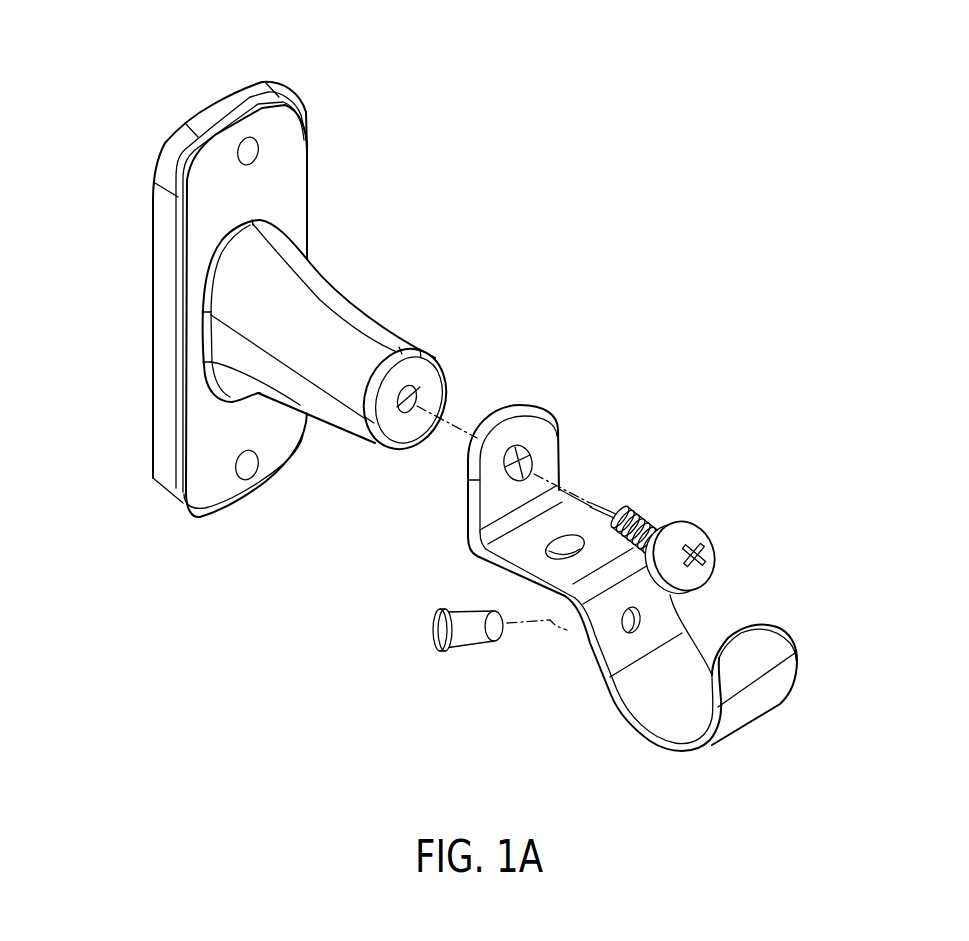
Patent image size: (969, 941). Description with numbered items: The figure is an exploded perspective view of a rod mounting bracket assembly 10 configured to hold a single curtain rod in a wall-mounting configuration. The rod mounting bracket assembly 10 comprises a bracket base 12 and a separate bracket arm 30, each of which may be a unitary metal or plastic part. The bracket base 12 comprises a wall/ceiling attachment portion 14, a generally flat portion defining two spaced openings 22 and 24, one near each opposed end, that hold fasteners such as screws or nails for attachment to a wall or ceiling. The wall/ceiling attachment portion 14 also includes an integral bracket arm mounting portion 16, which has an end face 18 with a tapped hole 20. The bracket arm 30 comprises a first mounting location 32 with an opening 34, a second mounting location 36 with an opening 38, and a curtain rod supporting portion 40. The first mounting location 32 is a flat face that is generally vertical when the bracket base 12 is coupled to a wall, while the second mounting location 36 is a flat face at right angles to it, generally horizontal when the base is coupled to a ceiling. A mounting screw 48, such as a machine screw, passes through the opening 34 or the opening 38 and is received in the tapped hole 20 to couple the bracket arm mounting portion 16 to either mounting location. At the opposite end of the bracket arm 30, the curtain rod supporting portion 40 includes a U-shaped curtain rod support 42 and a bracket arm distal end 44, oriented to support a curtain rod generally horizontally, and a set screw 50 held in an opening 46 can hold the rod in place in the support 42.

The rod mounting bracket assembly 10 is at (472, 399).
The bracket base 12 is at (277, 282).
The wall/ceiling attachment portion 14 is at (293, 193).
The bracket arm mounting portion 16 is at (353, 338).
The end face 18 is at (436, 343).
The tapped hole 20 is at (410, 395).
The opening 22 is at (245, 150).
The opening 24 is at (250, 463).
The bracket arm 30 is at (660, 572).
The first mounting location 32 is at (533, 420).
The opening 34 is at (532, 456).
The second mounting location 36 is at (684, 532).
The opening 38 is at (558, 540).
The curtain rod supporting portion 40 is at (697, 665).
The curtain rod support 42 is at (677, 723).
The bracket arm distal end 44 is at (775, 653).
The opening 46 is at (636, 622).
The mounting screw 48 is at (693, 538).
The set screw 50 is at (463, 630).